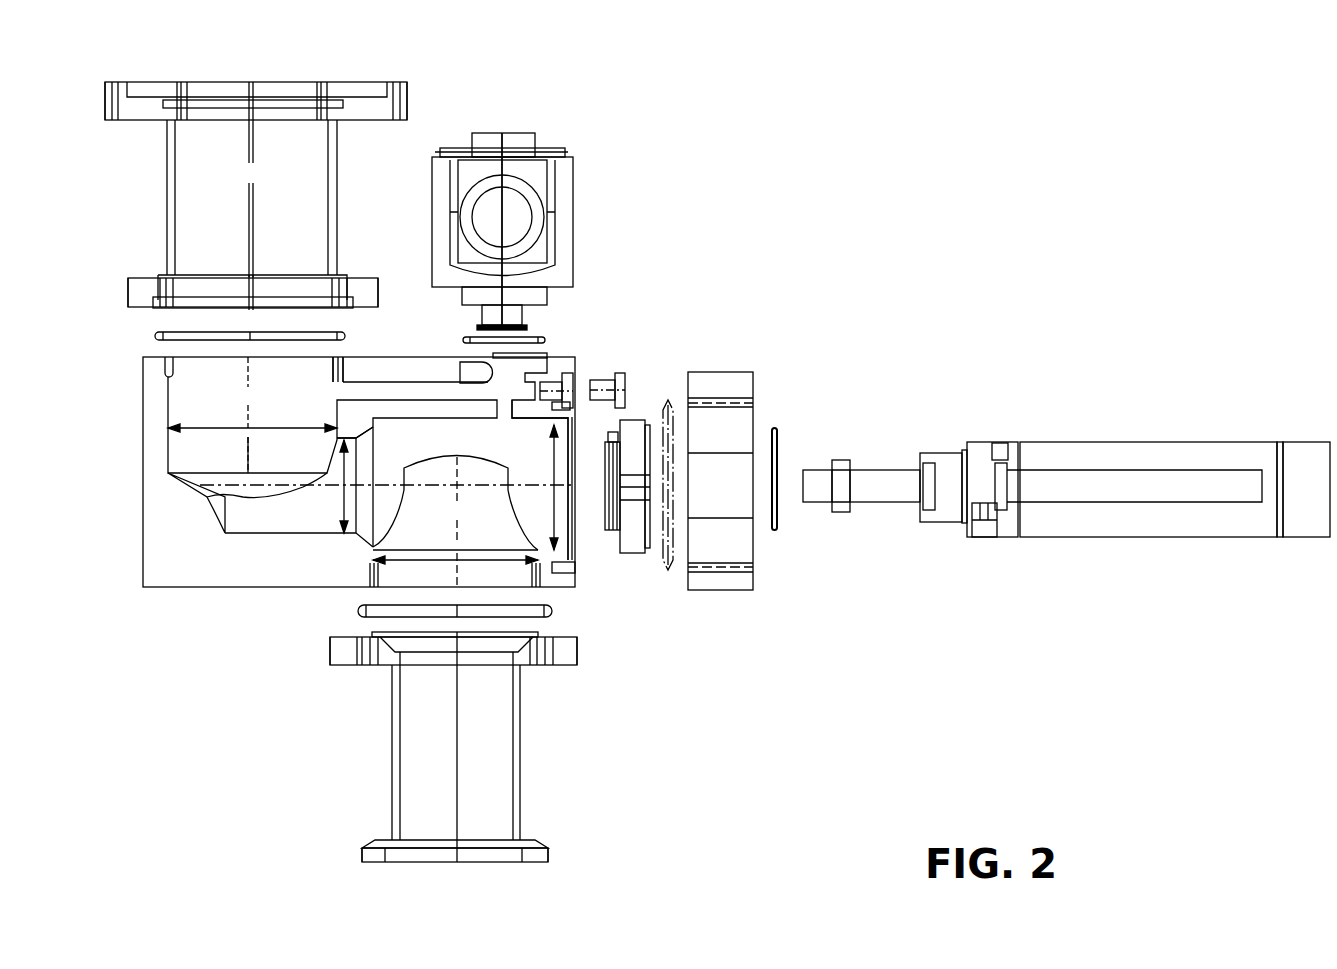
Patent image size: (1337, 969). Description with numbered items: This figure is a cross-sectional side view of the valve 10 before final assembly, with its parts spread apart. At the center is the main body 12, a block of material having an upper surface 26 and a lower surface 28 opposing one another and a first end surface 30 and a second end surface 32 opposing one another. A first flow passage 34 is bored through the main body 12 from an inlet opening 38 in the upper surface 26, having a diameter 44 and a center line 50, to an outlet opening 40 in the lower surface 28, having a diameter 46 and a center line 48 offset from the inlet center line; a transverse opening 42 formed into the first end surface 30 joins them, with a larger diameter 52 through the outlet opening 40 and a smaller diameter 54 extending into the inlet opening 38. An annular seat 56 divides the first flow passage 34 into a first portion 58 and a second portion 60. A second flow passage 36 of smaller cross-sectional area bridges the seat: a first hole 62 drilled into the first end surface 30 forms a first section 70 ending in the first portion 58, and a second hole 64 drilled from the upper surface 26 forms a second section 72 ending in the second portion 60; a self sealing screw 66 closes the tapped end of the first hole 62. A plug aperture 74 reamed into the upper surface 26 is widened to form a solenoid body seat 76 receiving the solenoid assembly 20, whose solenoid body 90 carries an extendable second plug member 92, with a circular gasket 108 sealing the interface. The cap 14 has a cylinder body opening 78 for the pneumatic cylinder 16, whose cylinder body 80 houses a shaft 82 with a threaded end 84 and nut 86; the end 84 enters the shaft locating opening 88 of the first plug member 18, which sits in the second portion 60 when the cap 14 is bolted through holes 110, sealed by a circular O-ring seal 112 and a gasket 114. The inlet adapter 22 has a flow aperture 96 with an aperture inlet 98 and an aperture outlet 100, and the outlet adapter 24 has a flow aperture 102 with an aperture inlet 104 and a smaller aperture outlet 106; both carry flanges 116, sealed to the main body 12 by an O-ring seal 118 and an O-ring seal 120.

The valve 10 is at (132, 52).
The main body 12 is at (366, 464).
The cap 14 is at (753, 506).
The pneumatic cylinder 16 is at (1056, 498).
The first plug member 18 is at (622, 509).
The solenoid assembly 20 is at (529, 231).
The inlet adapter 22 is at (268, 179).
The outlet adapter 24 is at (475, 747).
The upper surface 26 is at (397, 355).
The lower surface 28 is at (275, 588).
The first end surface 30 is at (565, 375).
The second end surface 32 is at (143, 422).
The first flow passage 34 is at (378, 486).
The second flow passage 36 is at (412, 382).
The inlet opening 38 is at (332, 452).
The outlet opening 40 is at (455, 522).
The transverse opening 42 is at (539, 487).
The diameter 44 is at (252, 419).
The diameter 46 is at (455, 549).
The center line 48 is at (455, 494).
The center line 50 is at (247, 458).
The larger diameter 52 is at (543, 510).
The smaller diameter 54 is at (328, 486).
The annular seat 56 is at (373, 432).
The first portion 58 is at (252, 375).
The second portion 60 is at (435, 422).
The first hole 62 is at (372, 357).
The second hole 64 is at (547, 355).
The self sealing screw 66 is at (618, 380).
The first section 70 is at (443, 385).
The second section 72 is at (540, 422).
The plug aperture 74 is at (475, 362).
The solenoid body seat 76 is at (505, 398).
The cylinder body opening 78 is at (745, 518).
The cylinder body 80 is at (1112, 442).
The shaft 82 is at (870, 476).
The end 84 is at (815, 470).
The nut 86 is at (842, 460).
The shaft locating opening 88 is at (615, 495).
The solenoid body 90 is at (574, 215).
The second plug member 92 is at (525, 325).
The flow aperture 96 is at (242, 200).
The aperture inlet 98 is at (296, 82).
The aperture outlet 100 is at (157, 336).
The flow aperture 102 is at (456, 750).
The aperture inlet 104 is at (540, 636).
The aperture outlet 106 is at (515, 862).
The O-ring 108 is at (540, 338).
The holes 110 is at (575, 570).
The circular O-ring seal 112 is at (667, 403).
The gasket 114 is at (778, 432).
The flanges 116 is at (105, 96).
The O-ring seal 118 is at (162, 370).
The O-ring seal 120 is at (358, 611).